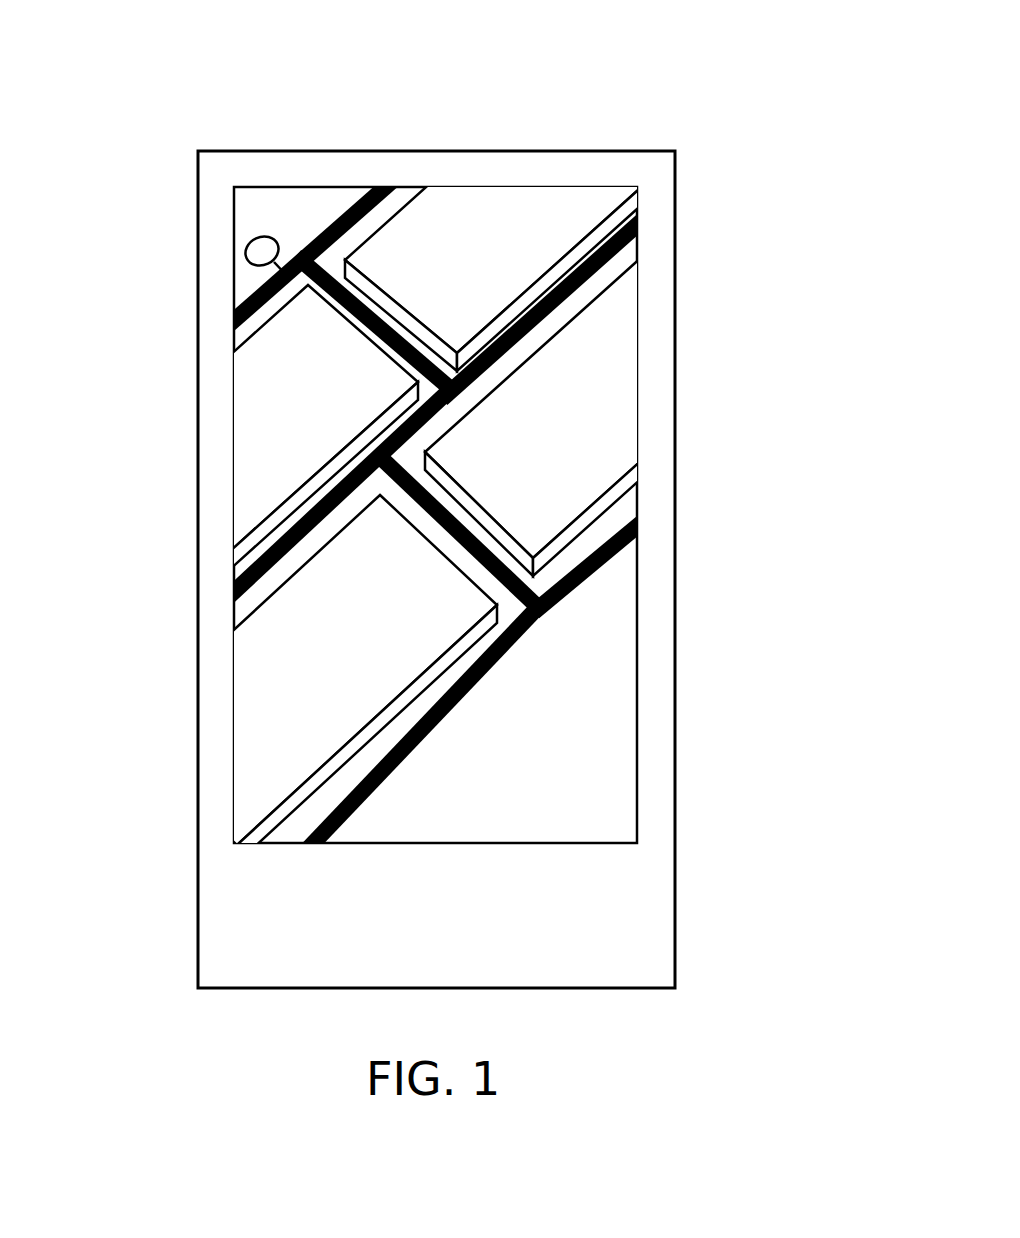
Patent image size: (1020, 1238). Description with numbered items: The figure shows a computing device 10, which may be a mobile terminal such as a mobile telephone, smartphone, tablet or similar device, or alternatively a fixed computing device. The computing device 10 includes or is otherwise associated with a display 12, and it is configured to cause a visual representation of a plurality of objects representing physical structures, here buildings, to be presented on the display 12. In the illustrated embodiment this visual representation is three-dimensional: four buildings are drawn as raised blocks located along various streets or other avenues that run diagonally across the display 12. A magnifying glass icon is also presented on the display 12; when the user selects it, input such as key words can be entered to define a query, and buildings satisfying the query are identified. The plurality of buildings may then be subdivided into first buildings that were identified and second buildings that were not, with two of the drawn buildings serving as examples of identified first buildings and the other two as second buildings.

The computing device 10 is at (752, 91).
The display 12 is at (435, 462).